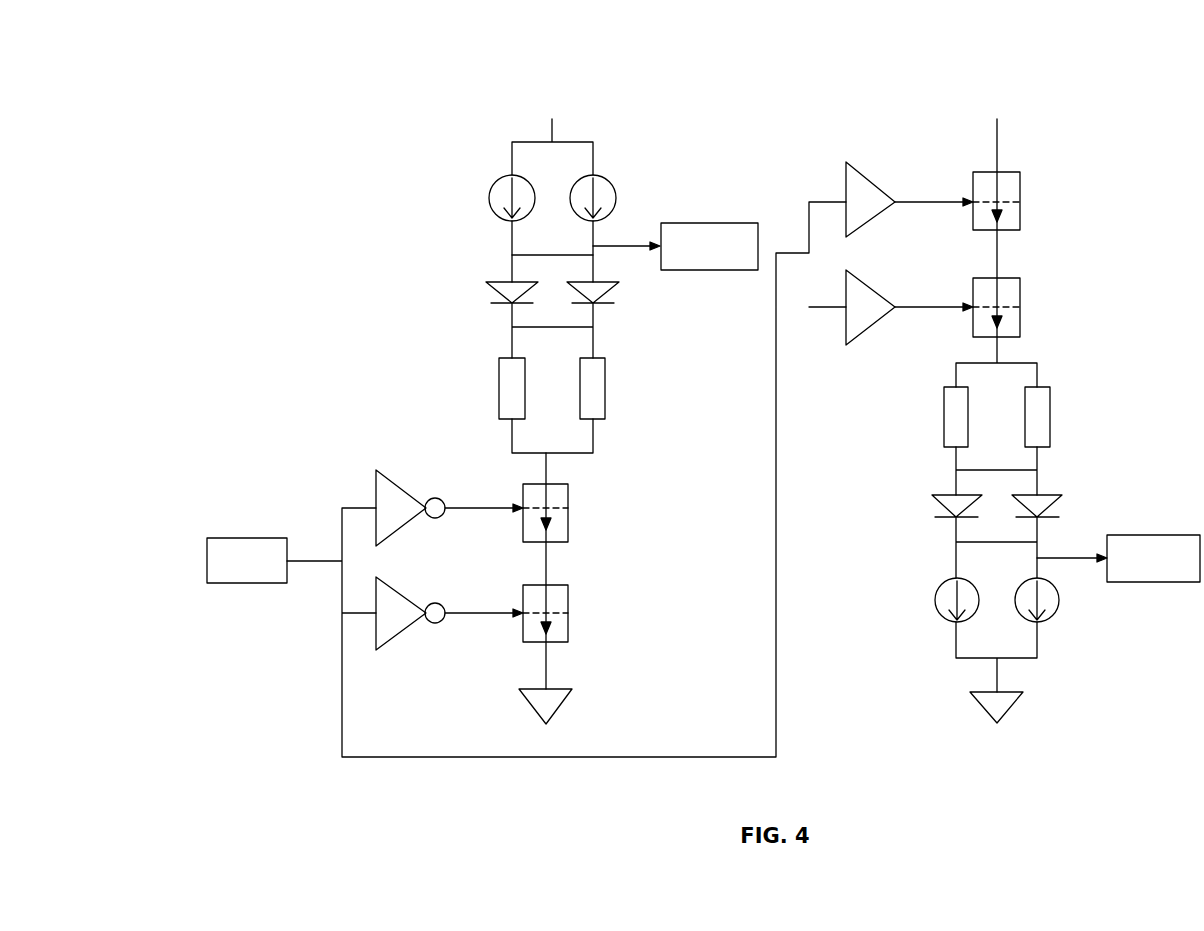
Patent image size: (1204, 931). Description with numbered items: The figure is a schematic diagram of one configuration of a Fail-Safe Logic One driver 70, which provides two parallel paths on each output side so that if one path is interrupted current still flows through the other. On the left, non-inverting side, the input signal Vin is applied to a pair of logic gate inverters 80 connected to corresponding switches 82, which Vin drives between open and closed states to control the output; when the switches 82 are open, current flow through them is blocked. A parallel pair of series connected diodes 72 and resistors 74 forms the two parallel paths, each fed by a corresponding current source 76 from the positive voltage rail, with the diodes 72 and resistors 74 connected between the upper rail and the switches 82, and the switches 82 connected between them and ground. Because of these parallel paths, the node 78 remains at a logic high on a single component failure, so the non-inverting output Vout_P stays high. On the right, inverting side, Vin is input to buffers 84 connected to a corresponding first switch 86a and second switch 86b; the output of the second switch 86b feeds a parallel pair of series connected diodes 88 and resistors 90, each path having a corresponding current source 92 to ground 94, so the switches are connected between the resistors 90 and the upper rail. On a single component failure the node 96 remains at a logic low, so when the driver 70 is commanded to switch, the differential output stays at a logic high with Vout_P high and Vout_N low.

The Fail-Safe Logic 1 driver 70 is at (1077, 65).
The diodes 72 is at (493, 292).
The resistors 74 is at (497, 370).
The current source 76 is at (503, 178).
The node 78 is at (510, 247).
The logic gate inverters 80 is at (376, 470).
The switches 82 is at (568, 497).
The buffers 84 is at (846, 163).
The switch 86a is at (1020, 180).
The switch 86b is at (1020, 290).
The diodes 88 is at (940, 495).
The resistors 90 is at (944, 400).
The current source 92 is at (948, 618).
The ground 94 is at (995, 720).
The node 96 is at (1073, 557).